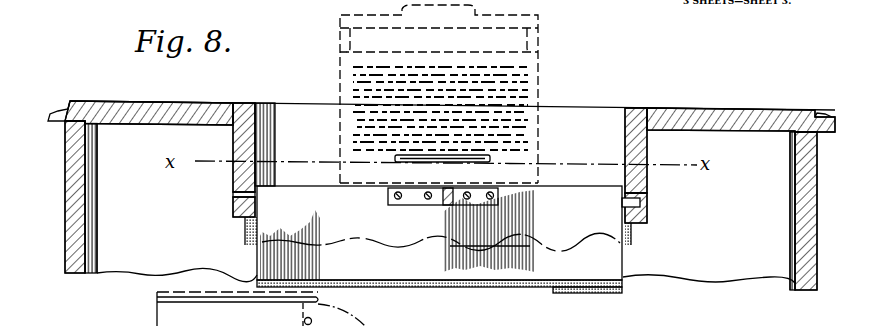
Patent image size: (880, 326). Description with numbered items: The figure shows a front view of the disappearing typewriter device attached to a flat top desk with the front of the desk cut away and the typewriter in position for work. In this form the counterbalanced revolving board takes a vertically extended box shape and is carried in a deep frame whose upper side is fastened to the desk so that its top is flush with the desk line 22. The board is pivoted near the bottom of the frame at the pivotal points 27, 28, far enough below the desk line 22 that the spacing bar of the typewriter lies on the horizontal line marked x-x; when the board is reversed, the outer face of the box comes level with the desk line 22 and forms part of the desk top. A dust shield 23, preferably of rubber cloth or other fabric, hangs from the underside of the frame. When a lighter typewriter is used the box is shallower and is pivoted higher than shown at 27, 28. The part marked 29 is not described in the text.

The desk line 22 is at (603, 114).
The dust shield 23 is at (250, 240).
The pivot 27 is at (232, 200).
The pivot 28 is at (645, 203).
The bottom support strip 29 is at (599, 304).